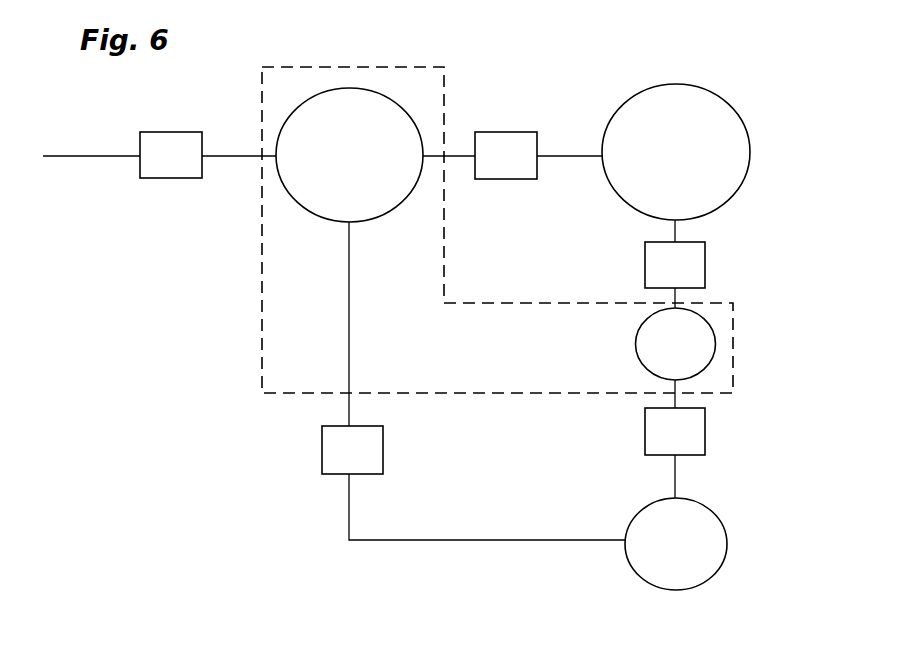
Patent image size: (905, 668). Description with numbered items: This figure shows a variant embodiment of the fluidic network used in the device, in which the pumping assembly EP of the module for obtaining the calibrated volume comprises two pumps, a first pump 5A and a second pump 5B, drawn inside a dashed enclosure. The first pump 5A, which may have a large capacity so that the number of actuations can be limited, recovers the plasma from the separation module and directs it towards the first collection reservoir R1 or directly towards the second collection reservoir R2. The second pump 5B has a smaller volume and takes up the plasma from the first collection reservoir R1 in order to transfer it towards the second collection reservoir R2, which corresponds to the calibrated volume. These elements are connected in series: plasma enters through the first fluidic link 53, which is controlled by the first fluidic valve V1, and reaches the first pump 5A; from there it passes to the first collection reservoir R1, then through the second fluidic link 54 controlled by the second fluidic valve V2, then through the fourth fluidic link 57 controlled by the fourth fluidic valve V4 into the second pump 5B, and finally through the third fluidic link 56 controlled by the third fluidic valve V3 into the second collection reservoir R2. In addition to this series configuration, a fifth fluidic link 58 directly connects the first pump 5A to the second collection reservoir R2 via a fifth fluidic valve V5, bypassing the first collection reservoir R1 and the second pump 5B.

The pumping assembly EP is at (262, 277).
The first fluidic link 53 is at (232, 156).
The second fluidic link 54 is at (562, 156).
The third fluidic link 56 is at (676, 477).
The fourth fluidic link 57 is at (676, 228).
The fifth fluidic link 58 is at (348, 510).
The first pump 5A is at (377, 110).
The second pump 5B is at (703, 338).
The first collection reservoir R1 is at (703, 120).
The second collection reservoir R2 is at (708, 528).
The first fluidic valve V1 is at (171, 139).
The second fluidic valve V2 is at (480, 143).
The third fluidic valve V3 is at (656, 417).
The fourth fluidic valve V4 is at (656, 265).
The fifth fluidic valve V5 is at (330, 348).